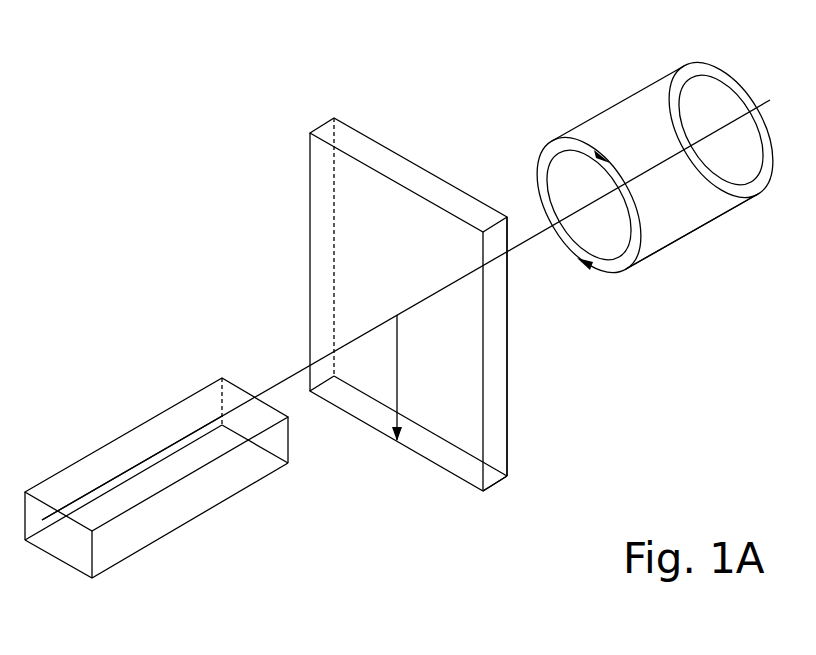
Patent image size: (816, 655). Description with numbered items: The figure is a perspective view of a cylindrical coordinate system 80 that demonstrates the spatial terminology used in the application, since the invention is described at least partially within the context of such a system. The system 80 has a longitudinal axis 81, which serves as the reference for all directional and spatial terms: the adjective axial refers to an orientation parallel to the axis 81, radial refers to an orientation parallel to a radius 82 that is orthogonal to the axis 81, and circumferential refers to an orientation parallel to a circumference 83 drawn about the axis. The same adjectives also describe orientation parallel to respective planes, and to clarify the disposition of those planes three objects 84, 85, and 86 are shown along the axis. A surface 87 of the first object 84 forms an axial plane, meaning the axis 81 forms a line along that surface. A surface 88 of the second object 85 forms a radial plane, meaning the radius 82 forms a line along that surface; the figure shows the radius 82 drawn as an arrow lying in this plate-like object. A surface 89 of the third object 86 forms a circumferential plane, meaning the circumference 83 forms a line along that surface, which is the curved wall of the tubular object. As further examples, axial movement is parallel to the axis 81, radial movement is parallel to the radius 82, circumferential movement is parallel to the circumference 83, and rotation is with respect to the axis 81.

The cylindrical coordinate system 80 is at (267, 179).
The longitudinal axis 81 is at (760, 100).
The radius 82 is at (397, 370).
The circumference 83 is at (537, 166).
The object 84 is at (118, 562).
The object 85 is at (517, 483).
The object 86 is at (687, 244).
The surface 87 is at (113, 457).
The surface 88 is at (325, 260).
The surface 89 is at (620, 102).